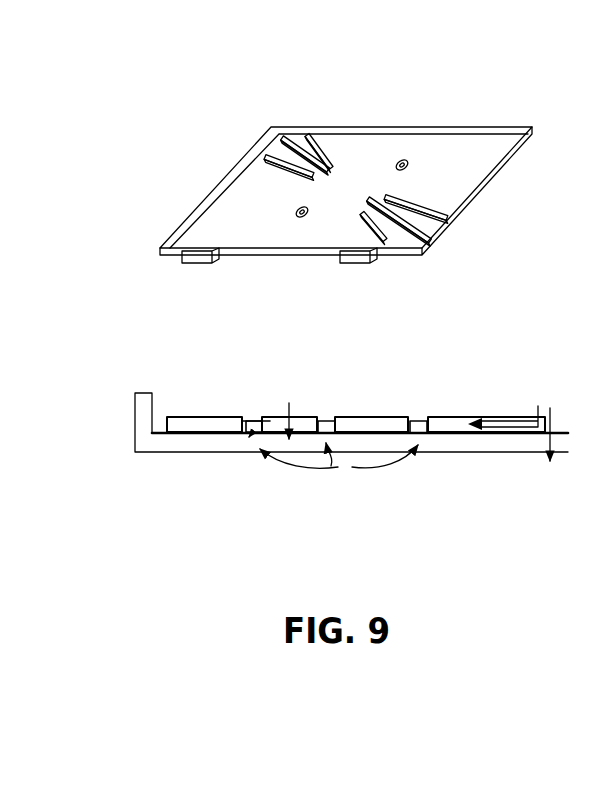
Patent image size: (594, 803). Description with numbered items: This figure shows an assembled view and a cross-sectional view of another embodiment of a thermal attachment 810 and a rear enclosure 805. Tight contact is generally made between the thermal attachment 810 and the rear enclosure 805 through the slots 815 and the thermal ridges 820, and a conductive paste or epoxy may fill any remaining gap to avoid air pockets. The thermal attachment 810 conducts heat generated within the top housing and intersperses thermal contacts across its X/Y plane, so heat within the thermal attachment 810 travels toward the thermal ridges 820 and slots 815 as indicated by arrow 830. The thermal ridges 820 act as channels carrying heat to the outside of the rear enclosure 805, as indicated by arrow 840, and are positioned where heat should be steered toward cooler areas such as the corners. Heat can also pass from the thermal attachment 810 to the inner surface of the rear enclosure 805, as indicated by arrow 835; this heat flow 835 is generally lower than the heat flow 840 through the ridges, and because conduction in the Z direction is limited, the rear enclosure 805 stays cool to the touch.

The rear enclosure 805 is at (500, 127).
The thermal attachment 810 is at (463, 160).
The slots 815 is at (276, 146).
The thermal ridges 820 is at (274, 345).
The arrow 830 is at (515, 444).
The arrow 835 is at (299, 378).
The arrow 840 is at (245, 385).